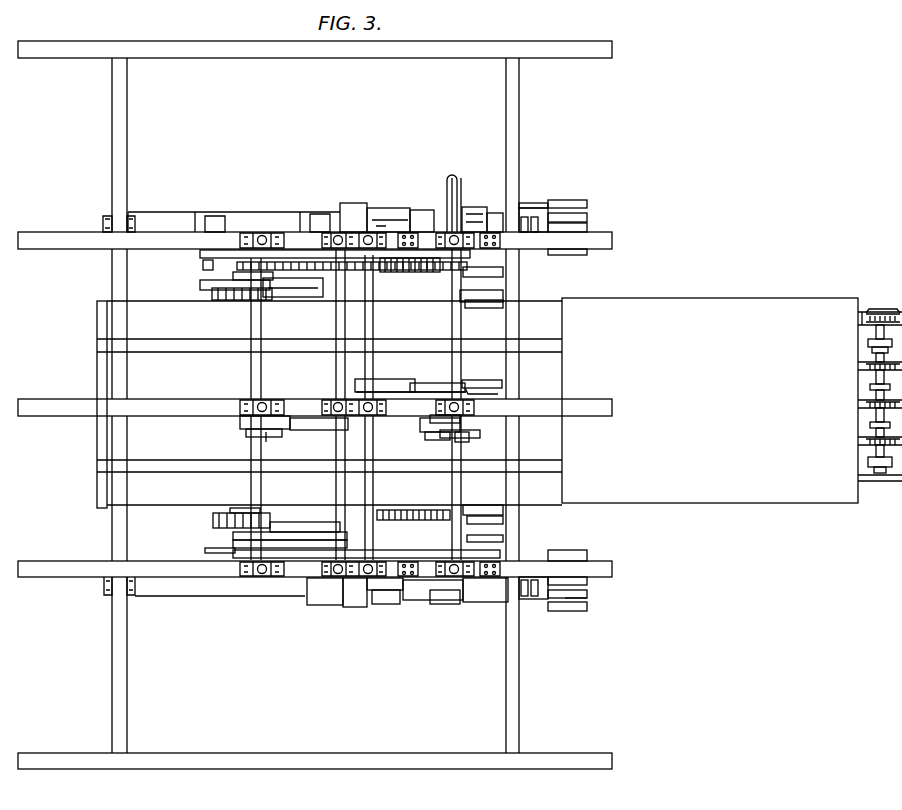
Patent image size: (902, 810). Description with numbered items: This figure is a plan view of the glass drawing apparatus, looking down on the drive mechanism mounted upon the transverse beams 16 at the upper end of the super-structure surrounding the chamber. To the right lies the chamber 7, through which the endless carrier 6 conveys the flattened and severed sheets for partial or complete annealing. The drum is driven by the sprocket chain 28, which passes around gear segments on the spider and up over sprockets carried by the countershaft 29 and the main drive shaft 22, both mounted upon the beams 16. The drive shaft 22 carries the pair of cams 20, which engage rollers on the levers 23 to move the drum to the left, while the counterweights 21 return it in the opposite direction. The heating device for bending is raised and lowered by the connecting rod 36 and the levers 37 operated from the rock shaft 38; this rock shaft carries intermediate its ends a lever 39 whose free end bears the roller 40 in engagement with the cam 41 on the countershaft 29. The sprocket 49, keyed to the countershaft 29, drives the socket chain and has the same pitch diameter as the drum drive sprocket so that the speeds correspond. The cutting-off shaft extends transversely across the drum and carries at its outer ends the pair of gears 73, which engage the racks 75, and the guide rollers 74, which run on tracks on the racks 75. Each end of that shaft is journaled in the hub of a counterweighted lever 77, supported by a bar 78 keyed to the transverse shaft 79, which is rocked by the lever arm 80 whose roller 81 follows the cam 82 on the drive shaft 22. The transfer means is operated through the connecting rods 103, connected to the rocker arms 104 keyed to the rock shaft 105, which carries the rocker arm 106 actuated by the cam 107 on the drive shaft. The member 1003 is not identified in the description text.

The transverse beams 16 is at (64, 224).
The chamber 7 is at (694, 303).
The endless carrier 6 is at (889, 380).
The countershaft 29 is at (250, 373).
The rock shaft 38 is at (336, 322).
The rock shaft 105 is at (373, 363).
The gears 73 is at (417, 304).
The guide rollers 74 is at (403, 278).
The racks 75 is at (324, 280).
The counterweighted lever 77 is at (375, 222).
The bar 78 is at (433, 210).
The cams 20 is at (478, 213).
The counterweights 21 is at (580, 208).
The levers 23 is at (516, 209).
The sprocket chain 28 is at (297, 232).
The levers 37 is at (222, 250).
The sprocket 49 is at (240, 250).
The connecting rod 36 is at (208, 268).
The connecting rods 103 is at (495, 284).
The rocker arms 104 is at (480, 306).
The arm 1003 is at (500, 521).
The rocker arm 106 is at (433, 383).
The cam 107 is at (490, 380).
The cam 82 is at (434, 416).
The roller 81 is at (425, 430).
The shaft 79 is at (426, 454).
The lever arm 80 is at (452, 436).
The roller 40 is at (242, 430).
The cam 41 is at (277, 444).
The lever 39 is at (310, 430).
The drive shaft 22 is at (462, 505).